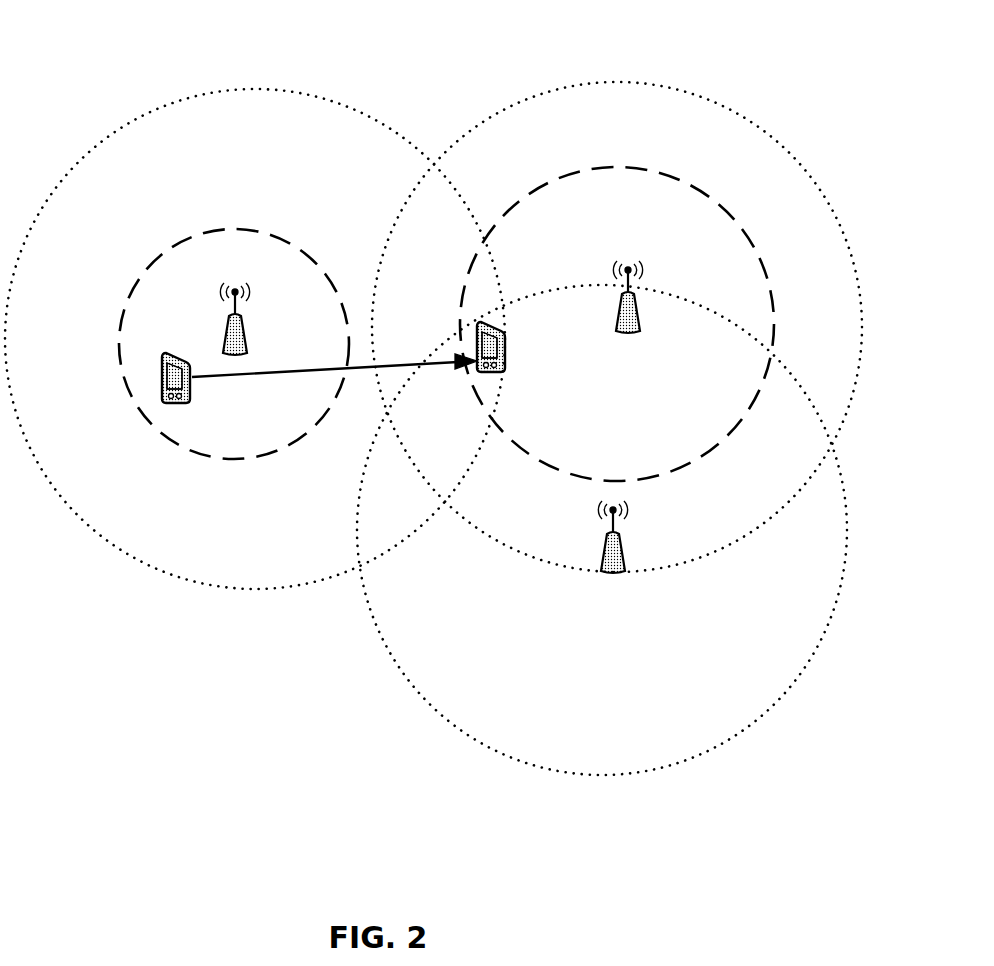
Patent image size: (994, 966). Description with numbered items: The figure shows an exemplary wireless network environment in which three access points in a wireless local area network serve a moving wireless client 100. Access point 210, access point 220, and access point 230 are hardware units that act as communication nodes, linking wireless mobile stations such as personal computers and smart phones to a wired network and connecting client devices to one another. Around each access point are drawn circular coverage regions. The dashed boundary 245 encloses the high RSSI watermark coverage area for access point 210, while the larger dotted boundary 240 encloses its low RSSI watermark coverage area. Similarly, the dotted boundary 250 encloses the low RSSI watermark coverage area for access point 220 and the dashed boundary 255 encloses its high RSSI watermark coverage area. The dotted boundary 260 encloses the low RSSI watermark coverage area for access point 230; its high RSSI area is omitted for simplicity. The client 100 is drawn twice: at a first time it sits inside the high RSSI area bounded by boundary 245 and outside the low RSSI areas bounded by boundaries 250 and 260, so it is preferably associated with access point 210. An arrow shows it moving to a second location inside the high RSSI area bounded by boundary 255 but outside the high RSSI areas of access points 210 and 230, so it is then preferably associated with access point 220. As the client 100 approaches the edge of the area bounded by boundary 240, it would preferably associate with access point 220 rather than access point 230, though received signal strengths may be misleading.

The client 100 is at (478, 368).
The access point 210 is at (260, 423).
The access point 220 is at (649, 406).
The access point 230 is at (635, 645).
The boundary 240 is at (255, 88).
The boundary 245 is at (232, 230).
The boundary 250 is at (583, 82).
The boundary 255 is at (618, 167).
The boundary 260 is at (410, 682).